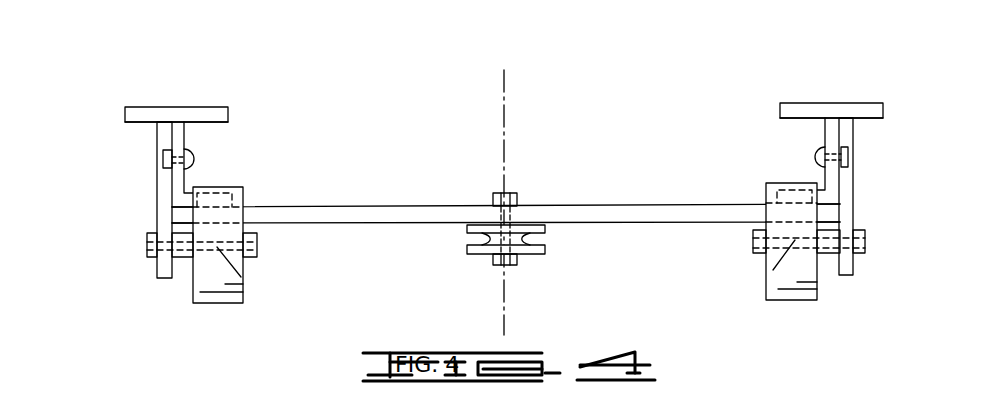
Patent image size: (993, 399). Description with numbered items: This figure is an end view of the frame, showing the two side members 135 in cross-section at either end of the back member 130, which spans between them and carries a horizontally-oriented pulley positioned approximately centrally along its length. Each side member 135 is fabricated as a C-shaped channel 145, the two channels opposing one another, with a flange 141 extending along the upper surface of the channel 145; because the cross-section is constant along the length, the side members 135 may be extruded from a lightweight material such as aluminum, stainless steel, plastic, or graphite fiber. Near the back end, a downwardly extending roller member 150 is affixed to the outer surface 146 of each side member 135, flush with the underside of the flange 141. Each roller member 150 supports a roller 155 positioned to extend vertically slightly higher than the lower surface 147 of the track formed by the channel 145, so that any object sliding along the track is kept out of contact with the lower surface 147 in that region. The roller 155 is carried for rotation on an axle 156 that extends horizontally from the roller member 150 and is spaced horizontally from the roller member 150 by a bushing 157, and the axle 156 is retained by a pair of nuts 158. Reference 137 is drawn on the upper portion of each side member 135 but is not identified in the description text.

The back member 130 is at (615, 223).
The side member 135 is at (127, 70).
The top bar 137 is at (195, 107).
The flange 141 is at (133, 122).
The C-shaped channel 145 is at (185, 135).
The outer surface 146 is at (175, 183).
The lower surface 147 is at (212, 200).
The roller member 150 is at (160, 215).
The roller 155 is at (210, 305).
The axle 156 is at (247, 285).
The bushing 157 is at (188, 258).
The nut 158 is at (147, 244).